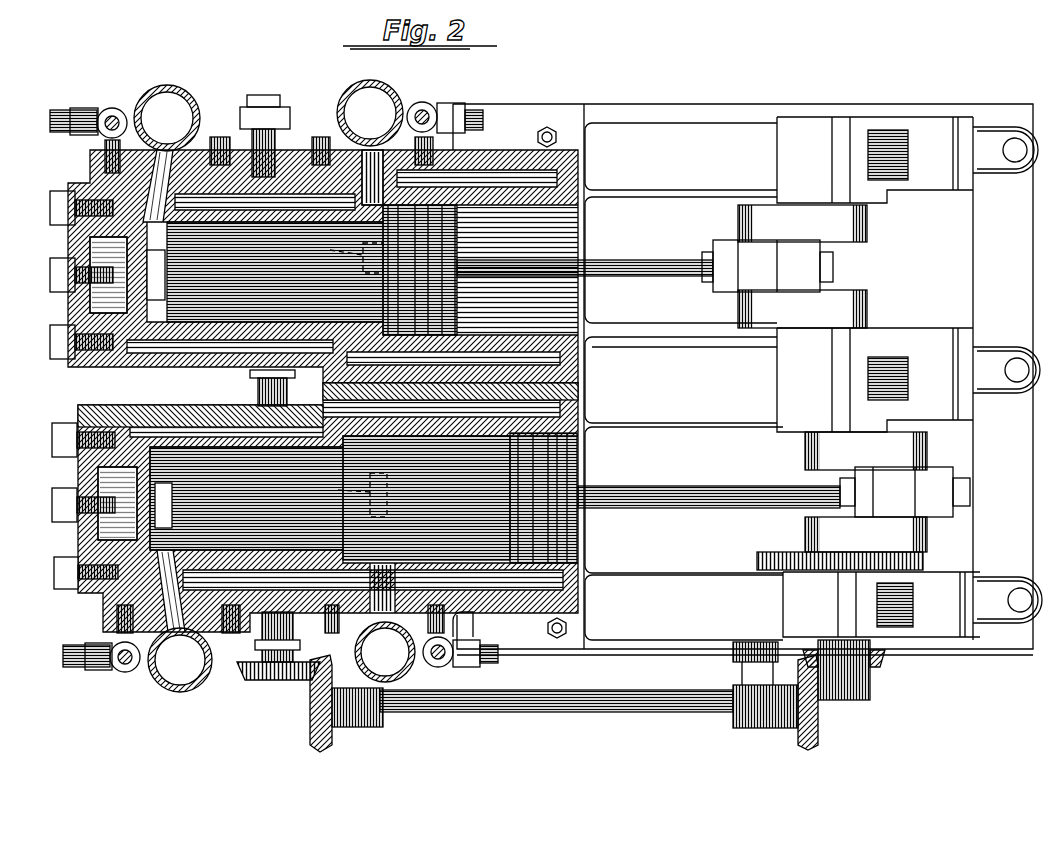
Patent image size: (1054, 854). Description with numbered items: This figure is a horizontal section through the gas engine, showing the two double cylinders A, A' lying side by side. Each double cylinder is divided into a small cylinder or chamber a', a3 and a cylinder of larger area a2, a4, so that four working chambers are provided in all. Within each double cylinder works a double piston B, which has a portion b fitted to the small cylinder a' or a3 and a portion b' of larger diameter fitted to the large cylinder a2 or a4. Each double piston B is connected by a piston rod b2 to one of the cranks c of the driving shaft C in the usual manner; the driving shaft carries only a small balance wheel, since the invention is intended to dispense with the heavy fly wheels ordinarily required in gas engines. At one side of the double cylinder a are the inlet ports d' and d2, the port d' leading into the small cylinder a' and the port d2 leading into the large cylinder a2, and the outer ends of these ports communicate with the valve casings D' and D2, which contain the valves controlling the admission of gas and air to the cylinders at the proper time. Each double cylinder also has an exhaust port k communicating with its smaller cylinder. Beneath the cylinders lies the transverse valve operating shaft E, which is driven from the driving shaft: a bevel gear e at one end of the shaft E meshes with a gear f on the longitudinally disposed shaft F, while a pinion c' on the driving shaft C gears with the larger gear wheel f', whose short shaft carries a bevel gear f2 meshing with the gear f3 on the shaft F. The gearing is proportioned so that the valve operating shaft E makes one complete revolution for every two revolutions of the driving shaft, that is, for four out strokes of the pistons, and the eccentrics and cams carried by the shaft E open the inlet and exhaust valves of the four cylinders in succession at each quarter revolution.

The double cylinder a is at (289, 266).
The small cylinder a' is at (73, 280).
The large cylinder a2 is at (318, 148).
The small cylinder a3 is at (78, 543).
The large cylinder a4 is at (299, 637).
The double cylinder A' is at (293, 507).
The piston portion b is at (330, 391).
The piston portion b' is at (480, 384).
The piston rod b2 is at (640, 268).
The double piston B is at (620, 385).
The crank c is at (836, 378).
The pinion c' is at (840, 540).
The driving shaft C is at (862, 686).
The inlet port d' is at (91, 390).
The inlet port d2 is at (413, 108).
The valve casing D' is at (162, 389).
The valve casing D2 is at (372, 100).
The bevel gear e is at (246, 682).
The valve operating shaft E is at (256, 390).
The gear f is at (305, 703).
The gear wheel f' is at (841, 587).
The bevel gear f2 is at (882, 660).
The gear f3 is at (818, 720).
The longitudinally disposed shaft F is at (548, 714).
The exhaust port k is at (65, 246).